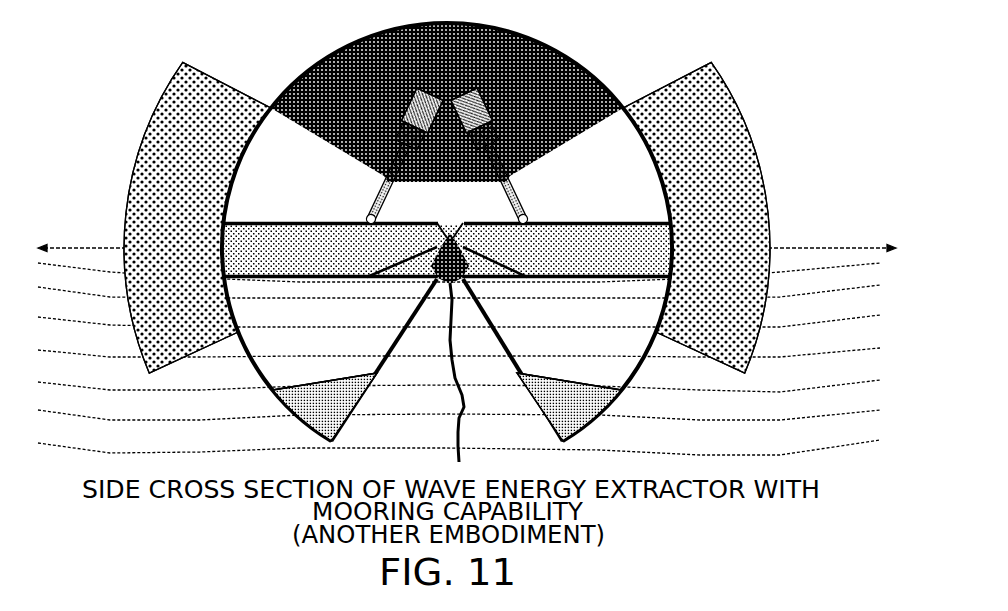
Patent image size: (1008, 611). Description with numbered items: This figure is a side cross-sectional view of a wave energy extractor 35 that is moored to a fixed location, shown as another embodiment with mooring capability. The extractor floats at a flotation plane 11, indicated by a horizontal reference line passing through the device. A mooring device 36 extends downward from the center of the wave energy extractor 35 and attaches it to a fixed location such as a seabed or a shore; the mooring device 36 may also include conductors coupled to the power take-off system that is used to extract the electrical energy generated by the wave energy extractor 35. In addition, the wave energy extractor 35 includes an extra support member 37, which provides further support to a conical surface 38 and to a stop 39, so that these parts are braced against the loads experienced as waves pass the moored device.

The flotation plane 11 is at (838, 247).
The wave energy extractor 35 is at (130, 27).
The mooring device 36 is at (456, 374).
The extra support member 37 is at (309, 421).
The conical surface 38 is at (402, 333).
The stop 39 is at (276, 387).